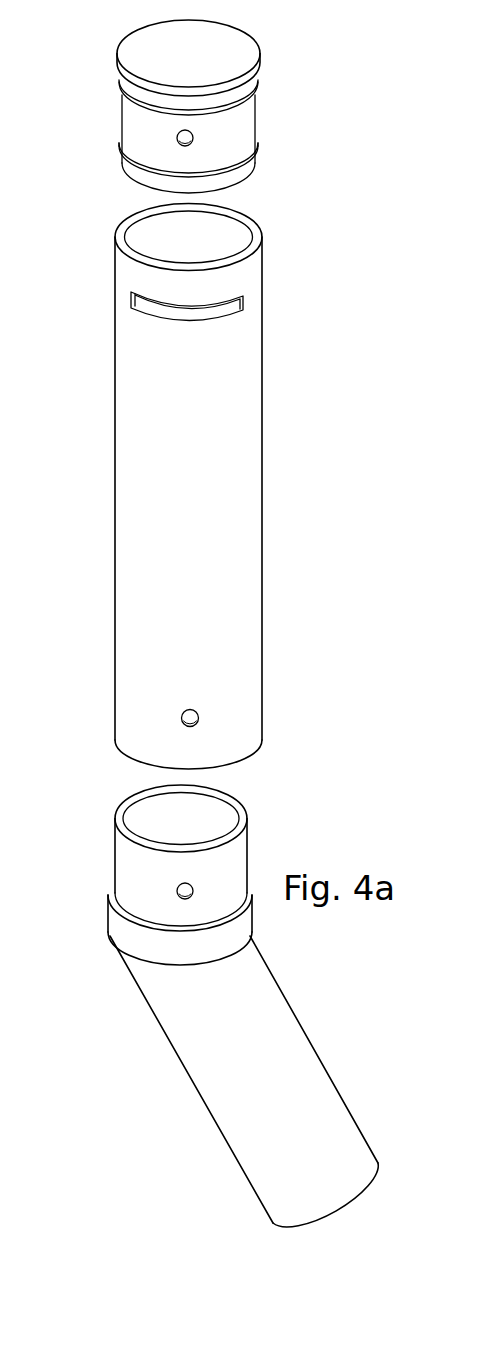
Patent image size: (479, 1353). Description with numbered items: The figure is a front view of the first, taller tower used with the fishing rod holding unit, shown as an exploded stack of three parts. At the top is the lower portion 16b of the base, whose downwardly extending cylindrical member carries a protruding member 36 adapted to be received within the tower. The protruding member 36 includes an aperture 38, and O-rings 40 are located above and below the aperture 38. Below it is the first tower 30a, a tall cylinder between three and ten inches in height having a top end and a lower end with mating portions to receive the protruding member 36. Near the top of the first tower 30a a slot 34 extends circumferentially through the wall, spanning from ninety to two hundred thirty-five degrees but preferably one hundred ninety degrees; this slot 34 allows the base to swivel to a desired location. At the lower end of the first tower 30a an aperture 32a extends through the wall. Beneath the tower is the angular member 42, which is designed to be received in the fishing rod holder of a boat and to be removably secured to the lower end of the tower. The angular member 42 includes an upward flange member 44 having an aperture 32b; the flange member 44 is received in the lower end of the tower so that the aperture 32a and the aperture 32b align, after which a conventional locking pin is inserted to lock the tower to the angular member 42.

The lower portion 16b is at (201, 106).
The protruding member 36 is at (135, 132).
The aperture 38 is at (176, 141).
The O-rings 40 is at (255, 157).
The first tower 30a is at (185, 486).
The slot 34 is at (243, 305).
The aperture 32a is at (200, 715).
The aperture 32b is at (197, 888).
The upward flange member 44 is at (123, 878).
The angular member 42 is at (214, 1006).